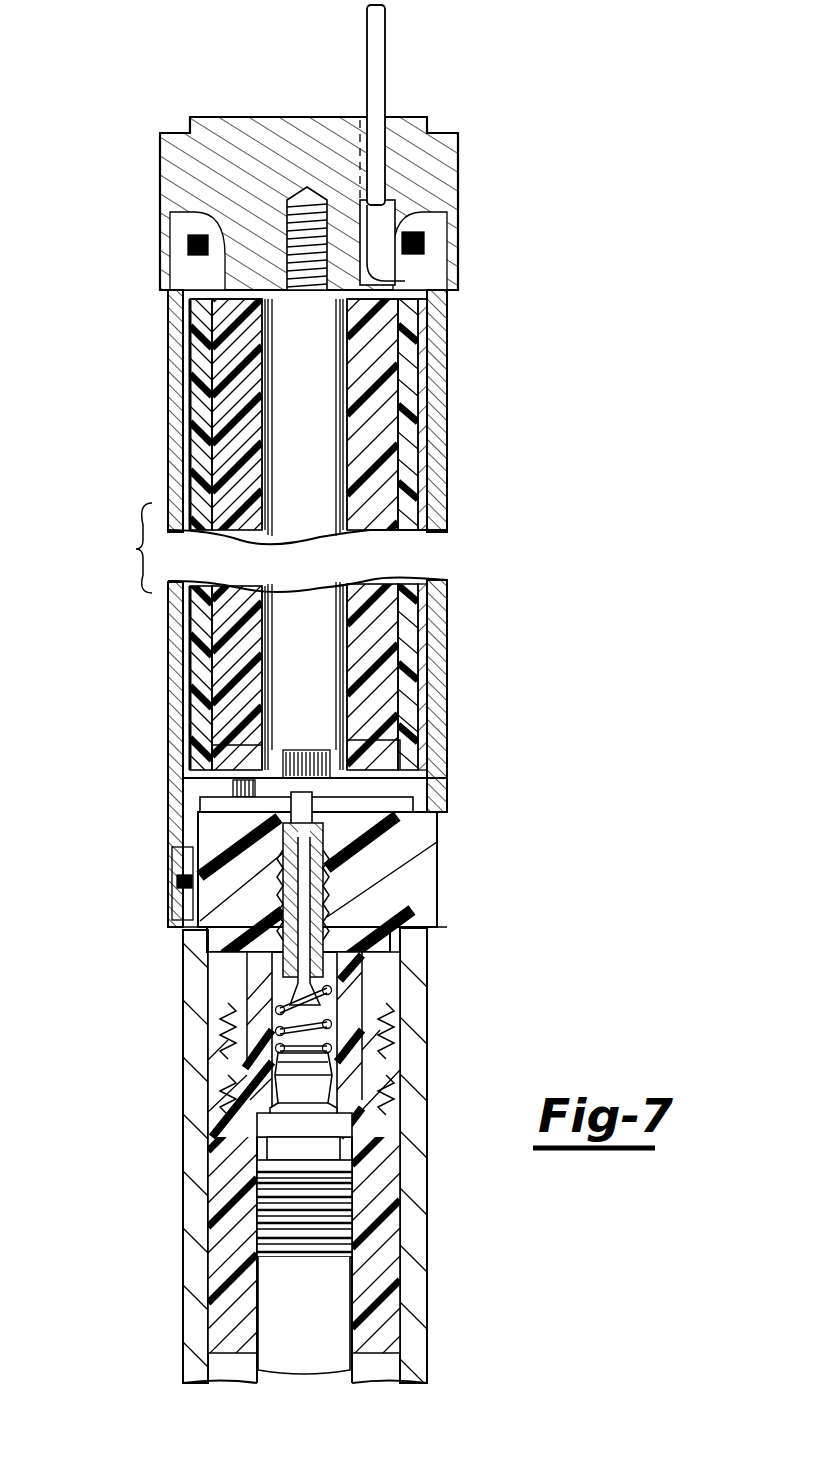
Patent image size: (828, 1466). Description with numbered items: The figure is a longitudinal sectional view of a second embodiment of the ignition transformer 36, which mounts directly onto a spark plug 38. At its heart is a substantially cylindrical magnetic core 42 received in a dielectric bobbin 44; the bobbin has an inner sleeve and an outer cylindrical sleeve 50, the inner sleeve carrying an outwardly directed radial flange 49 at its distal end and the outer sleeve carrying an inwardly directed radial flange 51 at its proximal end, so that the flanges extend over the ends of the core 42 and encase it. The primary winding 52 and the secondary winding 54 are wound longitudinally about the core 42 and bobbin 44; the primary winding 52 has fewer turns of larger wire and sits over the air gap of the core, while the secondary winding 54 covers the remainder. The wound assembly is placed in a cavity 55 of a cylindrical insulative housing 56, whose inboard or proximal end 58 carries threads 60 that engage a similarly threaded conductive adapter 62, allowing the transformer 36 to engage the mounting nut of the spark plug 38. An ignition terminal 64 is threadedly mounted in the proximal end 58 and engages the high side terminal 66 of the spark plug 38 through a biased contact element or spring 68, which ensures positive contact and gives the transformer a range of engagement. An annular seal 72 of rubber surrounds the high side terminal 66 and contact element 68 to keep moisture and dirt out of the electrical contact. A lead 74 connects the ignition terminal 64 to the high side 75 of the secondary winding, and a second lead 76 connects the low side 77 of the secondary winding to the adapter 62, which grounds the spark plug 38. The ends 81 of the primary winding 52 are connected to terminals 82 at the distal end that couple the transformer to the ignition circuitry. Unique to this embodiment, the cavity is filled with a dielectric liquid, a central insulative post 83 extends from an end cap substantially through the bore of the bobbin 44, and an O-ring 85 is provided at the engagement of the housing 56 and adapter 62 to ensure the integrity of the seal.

The ignition transformer 36 is at (483, 113).
The spark plug 38 is at (352, 1295).
The magnetic core 42 is at (388, 487).
The dielectric bobbin 44 is at (428, 440).
The outwardly directed radial flange 49 is at (388, 338).
The outer cylindrical sleeve 50 is at (408, 412).
The inwardly directed radial flange 51 is at (397, 752).
The primary winding 52 is at (428, 312).
The secondary winding 54 is at (190, 208).
The cavity 55 is at (200, 287).
The insulative housing 56 is at (433, 637).
The proximal end of the housing 58 is at (235, 866).
The threads 60 is at (388, 1048).
The adapter 62 is at (413, 1057).
The ignition terminal 64 is at (330, 870).
The high side terminal 66 is at (292, 1080).
The biased contact element 68 is at (278, 1030).
The annular seal 72 is at (220, 1112).
The lead 74 is at (313, 803).
The high side of the secondary winding 75 is at (405, 778).
The second lead 76 is at (200, 809).
The low side of the secondary winding 77 is at (243, 790).
The ends of the primary winding 81 is at (395, 228).
The terminals 82 is at (373, 44).
The central insulative post 83 is at (285, 372).
The O-ring 85 is at (426, 248).